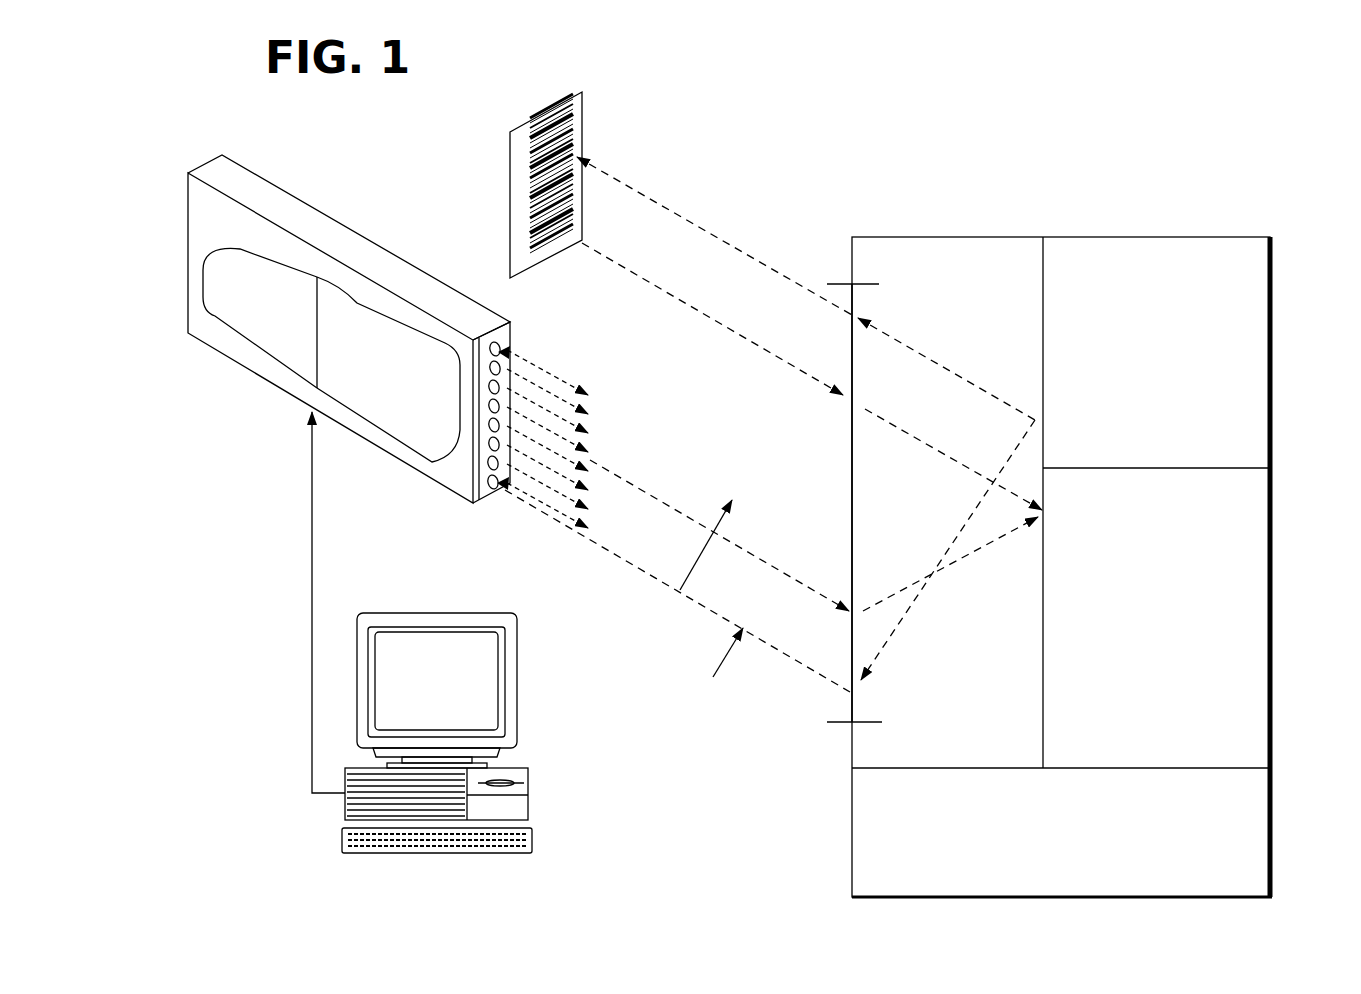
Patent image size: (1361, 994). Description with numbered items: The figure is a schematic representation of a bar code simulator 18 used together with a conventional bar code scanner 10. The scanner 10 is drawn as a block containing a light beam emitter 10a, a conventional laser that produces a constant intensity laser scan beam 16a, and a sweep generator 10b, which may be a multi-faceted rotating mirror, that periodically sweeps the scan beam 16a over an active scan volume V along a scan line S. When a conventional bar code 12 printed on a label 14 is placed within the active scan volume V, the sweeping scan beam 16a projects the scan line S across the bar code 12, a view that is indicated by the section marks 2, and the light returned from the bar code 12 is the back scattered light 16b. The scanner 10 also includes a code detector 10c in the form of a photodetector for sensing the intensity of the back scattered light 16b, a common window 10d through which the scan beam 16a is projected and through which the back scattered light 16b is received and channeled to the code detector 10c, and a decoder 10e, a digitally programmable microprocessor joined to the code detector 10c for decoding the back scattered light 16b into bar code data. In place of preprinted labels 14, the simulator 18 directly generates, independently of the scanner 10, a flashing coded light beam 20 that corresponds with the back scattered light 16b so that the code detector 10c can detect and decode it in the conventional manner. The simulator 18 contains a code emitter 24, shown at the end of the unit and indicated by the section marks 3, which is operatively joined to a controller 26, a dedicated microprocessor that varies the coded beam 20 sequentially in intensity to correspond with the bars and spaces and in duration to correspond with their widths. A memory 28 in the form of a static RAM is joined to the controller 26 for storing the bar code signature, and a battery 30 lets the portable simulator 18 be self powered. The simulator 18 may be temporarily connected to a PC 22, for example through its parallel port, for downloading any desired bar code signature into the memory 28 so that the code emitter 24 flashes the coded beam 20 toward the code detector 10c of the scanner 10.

The bar code scanner 10 is at (1057, 541).
The light beam emitter 10a is at (1152, 270).
The sweep generator 10b is at (877, 236).
The code detector 10c is at (1250, 512).
The window 10d is at (851, 452).
The decoder 10e is at (1247, 834).
The bar code 12 is at (548, 137).
The label 14 is at (514, 179).
The scan beam 16a is at (632, 188).
The back scattered light 16b is at (661, 290).
The bar code simulator 18 is at (316, 346).
The coded light beam 20 is at (632, 487).
The PC 22 is at (517, 690).
The code emitter 24 is at (475, 508).
The controller 26 is at (398, 430).
The memory 28 is at (333, 293).
The battery 30 is at (245, 333).
The active scan volume V is at (766, 262).
The scan line S is at (690, 567).
The section line for FIG. 2 is at (660, 127).
The section line for FIG. 3 is at (572, 363).